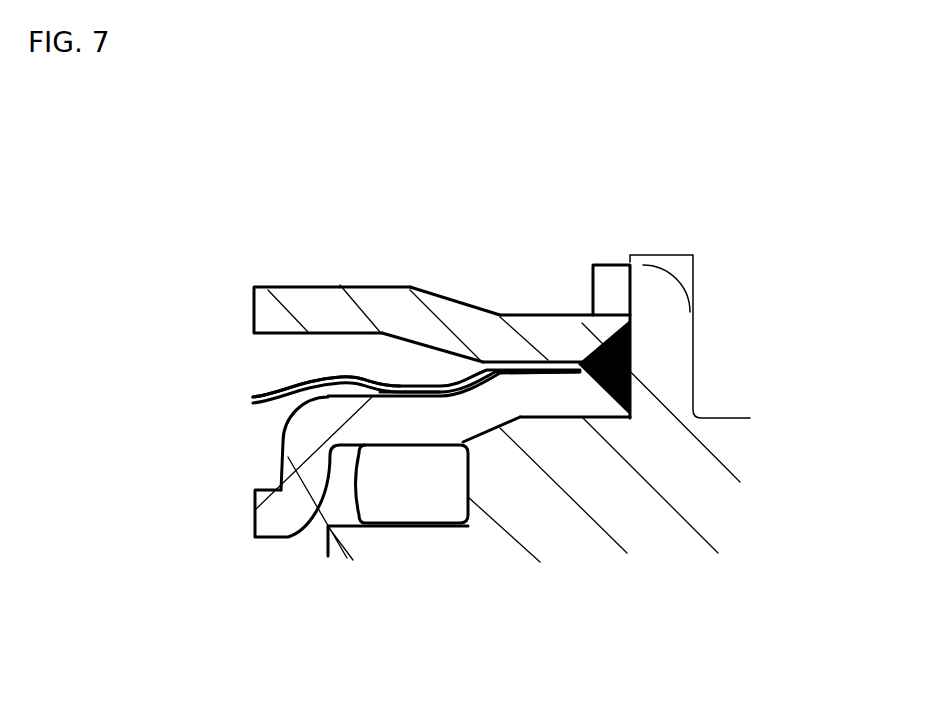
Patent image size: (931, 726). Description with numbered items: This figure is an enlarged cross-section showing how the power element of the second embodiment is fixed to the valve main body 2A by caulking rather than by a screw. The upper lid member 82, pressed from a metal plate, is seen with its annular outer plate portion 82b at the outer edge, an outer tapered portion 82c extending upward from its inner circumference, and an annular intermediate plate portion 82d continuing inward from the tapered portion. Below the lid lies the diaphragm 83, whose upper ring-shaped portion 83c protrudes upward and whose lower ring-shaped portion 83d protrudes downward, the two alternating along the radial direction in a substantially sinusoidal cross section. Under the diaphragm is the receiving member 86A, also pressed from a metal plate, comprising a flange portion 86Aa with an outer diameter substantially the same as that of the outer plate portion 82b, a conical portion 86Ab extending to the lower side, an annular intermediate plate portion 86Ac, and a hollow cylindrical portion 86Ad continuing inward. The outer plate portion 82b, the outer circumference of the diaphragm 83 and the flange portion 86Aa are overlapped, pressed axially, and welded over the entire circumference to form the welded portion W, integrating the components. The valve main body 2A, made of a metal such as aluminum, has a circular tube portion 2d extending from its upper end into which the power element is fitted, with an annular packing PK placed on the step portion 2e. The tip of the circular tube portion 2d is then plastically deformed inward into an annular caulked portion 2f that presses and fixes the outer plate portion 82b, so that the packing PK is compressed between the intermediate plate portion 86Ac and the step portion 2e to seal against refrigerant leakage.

The upper lid member 82 is at (390, 255).
The outer plate portion 82b is at (542, 313).
The outer tapered portion 82c is at (432, 293).
The intermediate plate portion 82d is at (310, 297).
The diaphragm 83 is at (344, 421).
The upper ring-shaped portion 83c is at (332, 377).
The lower ring-shaped portion 83d is at (407, 398).
The receiving member 86A is at (376, 535).
The flange portion 86Aa is at (573, 415).
The conical portion 86Ab is at (480, 428).
The intermediate plate portion 86Ac is at (391, 437).
The hollow cylindrical portion 86Ad is at (288, 457).
The valve main body 2A is at (493, 332).
The circular tube portion 2d is at (695, 363).
The step portion 2e is at (280, 485).
The caulked portion 2f is at (629, 310).
The welded portion W is at (630, 370).
The packing PK is at (380, 513).